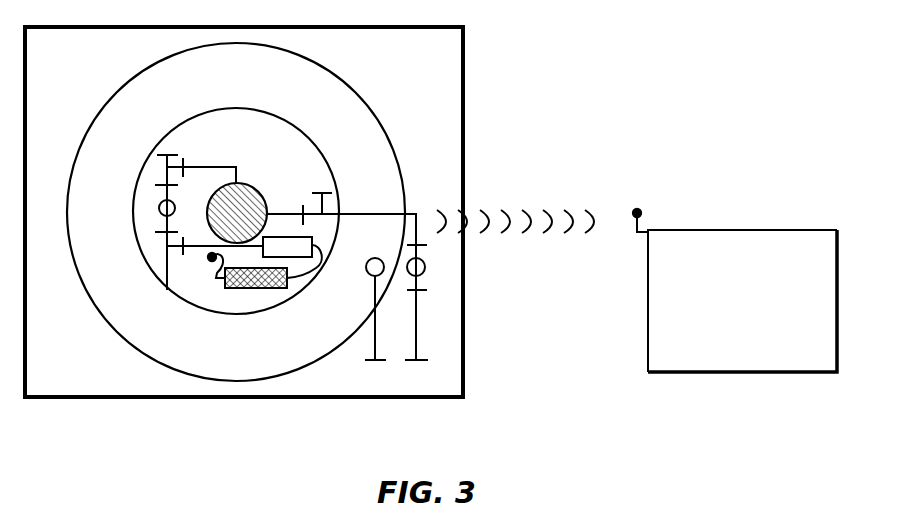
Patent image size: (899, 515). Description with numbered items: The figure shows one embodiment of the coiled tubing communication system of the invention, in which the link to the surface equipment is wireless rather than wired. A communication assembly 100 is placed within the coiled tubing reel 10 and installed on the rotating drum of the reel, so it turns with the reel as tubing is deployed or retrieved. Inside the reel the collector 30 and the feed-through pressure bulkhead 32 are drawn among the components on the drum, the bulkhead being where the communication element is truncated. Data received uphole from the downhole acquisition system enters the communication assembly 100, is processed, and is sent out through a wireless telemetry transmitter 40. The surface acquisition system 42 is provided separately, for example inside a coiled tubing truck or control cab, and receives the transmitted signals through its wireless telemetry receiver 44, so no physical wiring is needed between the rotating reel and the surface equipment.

The coiled tubing reel 10 is at (383, 120).
The collector 30 is at (253, 182).
The feed-through pressure bulkhead 32 is at (304, 279).
The wireless telemetry transmitter 40 is at (207, 271).
The communication assembly 100 is at (263, 288).
The surface acquisition system 42 is at (758, 314).
The wireless telemetry receiver 44 is at (640, 223).